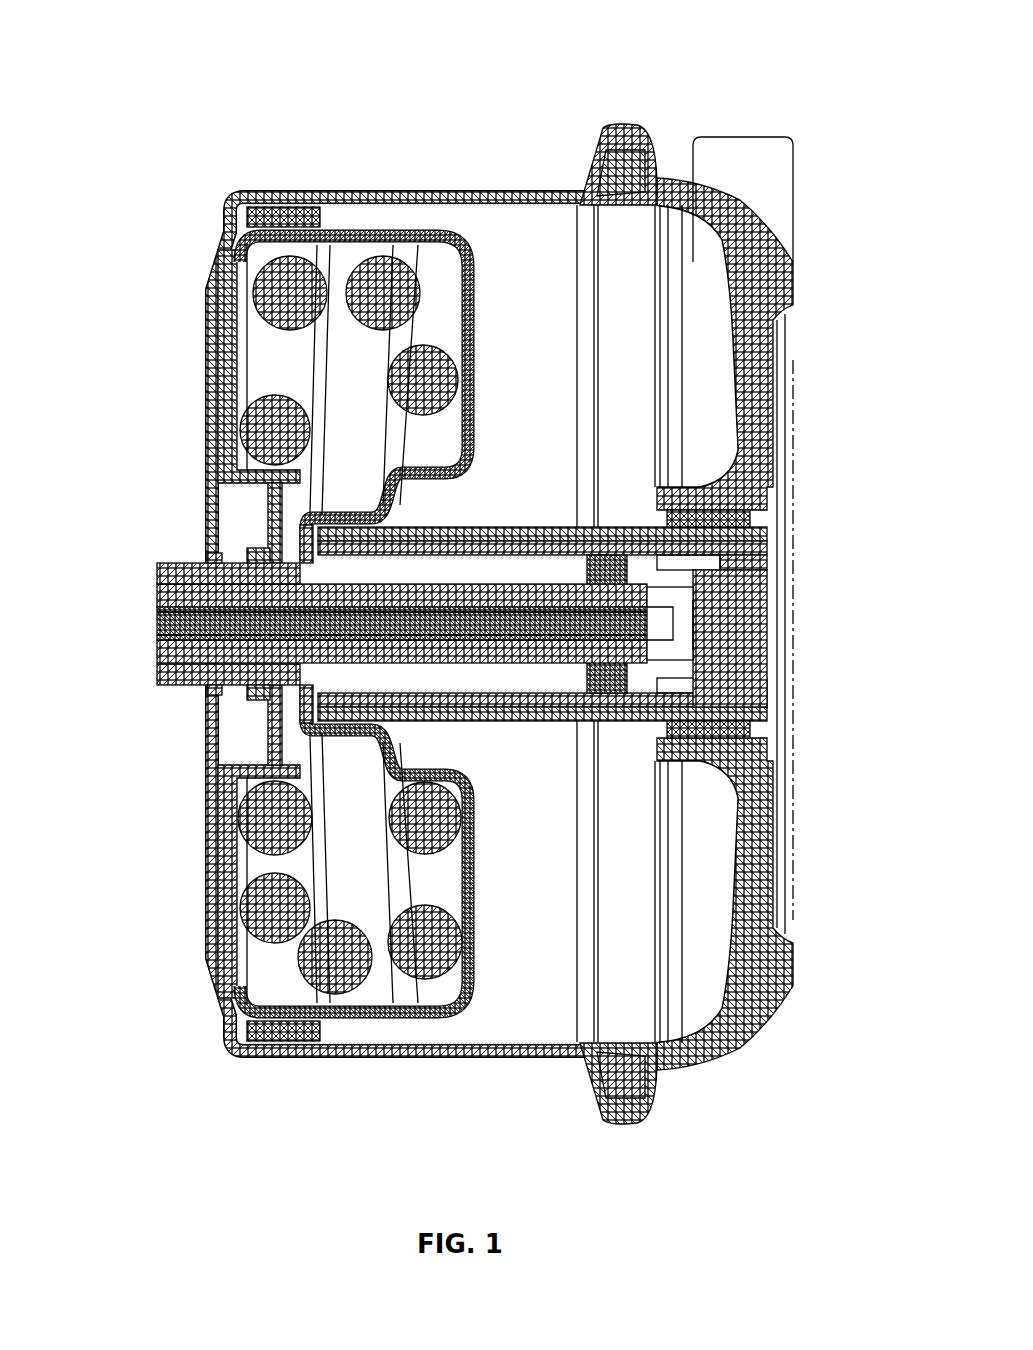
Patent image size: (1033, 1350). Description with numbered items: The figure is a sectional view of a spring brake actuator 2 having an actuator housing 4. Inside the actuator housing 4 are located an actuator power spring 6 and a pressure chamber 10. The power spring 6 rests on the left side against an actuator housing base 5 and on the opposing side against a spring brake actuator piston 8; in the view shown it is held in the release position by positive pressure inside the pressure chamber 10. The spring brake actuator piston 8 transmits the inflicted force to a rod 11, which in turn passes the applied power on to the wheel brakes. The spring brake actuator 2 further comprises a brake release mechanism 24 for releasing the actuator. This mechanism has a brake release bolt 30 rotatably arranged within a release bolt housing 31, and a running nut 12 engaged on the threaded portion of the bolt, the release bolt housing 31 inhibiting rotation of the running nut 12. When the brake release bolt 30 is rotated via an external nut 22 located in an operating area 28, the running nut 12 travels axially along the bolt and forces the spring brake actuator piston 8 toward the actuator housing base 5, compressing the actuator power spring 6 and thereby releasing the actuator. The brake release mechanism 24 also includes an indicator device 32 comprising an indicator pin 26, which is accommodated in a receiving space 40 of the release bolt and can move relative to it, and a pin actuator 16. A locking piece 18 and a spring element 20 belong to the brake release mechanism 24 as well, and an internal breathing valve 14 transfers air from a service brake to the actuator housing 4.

The spring brake actuator 2 is at (112, 82).
The actuator housing 4 is at (300, 1061).
The actuator housing base 5 is at (215, 343).
The actuator power spring 6 is at (383, 292).
The spring brake actuator piston 8 is at (440, 330).
The pressure chamber 10 is at (527, 240).
The rod 11 is at (635, 700).
The running nut 12 is at (603, 555).
The internal breathing valve 14 is at (760, 520).
The pin actuator 16 is at (700, 610).
The locking piece 18 is at (600, 694).
The spring element 20 is at (515, 652).
The external nut 22 is at (164, 686).
The brake release mechanism 24 is at (112, 490).
The indicator pin 26 is at (157, 626).
The operating area 28 is at (120, 684).
The brake release bolt 30 is at (158, 563).
The release bolt housing 31 is at (362, 690).
The indicator device 32 is at (700, 645).
The receiving space 40 is at (148, 596).